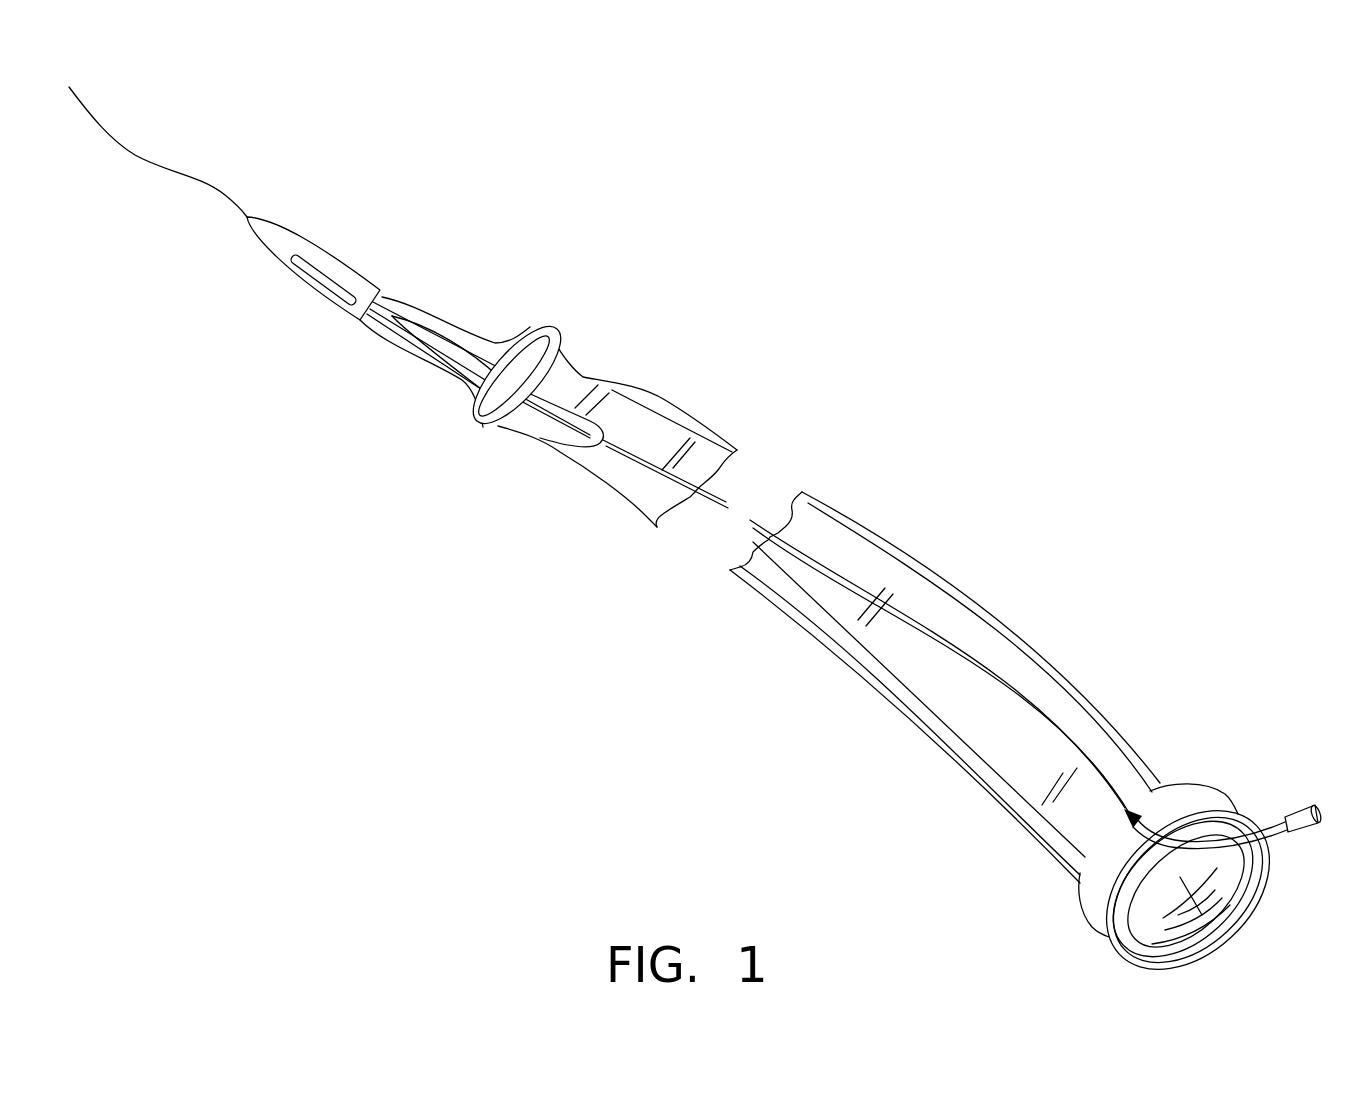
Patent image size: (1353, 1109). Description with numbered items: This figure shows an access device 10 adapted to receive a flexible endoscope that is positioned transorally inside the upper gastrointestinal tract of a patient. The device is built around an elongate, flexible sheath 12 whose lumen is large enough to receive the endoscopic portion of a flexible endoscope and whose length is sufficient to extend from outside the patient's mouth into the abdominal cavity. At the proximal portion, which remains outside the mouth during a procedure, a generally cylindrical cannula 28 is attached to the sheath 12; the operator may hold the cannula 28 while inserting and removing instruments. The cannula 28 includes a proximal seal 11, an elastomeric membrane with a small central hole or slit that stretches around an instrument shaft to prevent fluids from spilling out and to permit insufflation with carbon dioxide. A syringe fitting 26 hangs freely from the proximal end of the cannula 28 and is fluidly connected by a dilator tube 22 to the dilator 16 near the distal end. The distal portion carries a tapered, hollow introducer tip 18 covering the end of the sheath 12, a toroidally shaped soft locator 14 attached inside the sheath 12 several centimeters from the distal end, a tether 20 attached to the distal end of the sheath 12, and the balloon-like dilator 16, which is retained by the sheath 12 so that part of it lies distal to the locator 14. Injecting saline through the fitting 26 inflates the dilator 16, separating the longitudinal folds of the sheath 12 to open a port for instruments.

The access device 10 is at (795, 246).
The proximal seal 11 is at (1220, 887).
The sheath 12 is at (893, 540).
The locator 14 is at (487, 419).
The dilator 16 is at (580, 377).
The introducer tip 18 is at (313, 240).
The tether 20 is at (104, 130).
The dilator tube 22 is at (818, 566).
The syringe fitting 26 is at (1301, 800).
The cannula 28 is at (1213, 782).